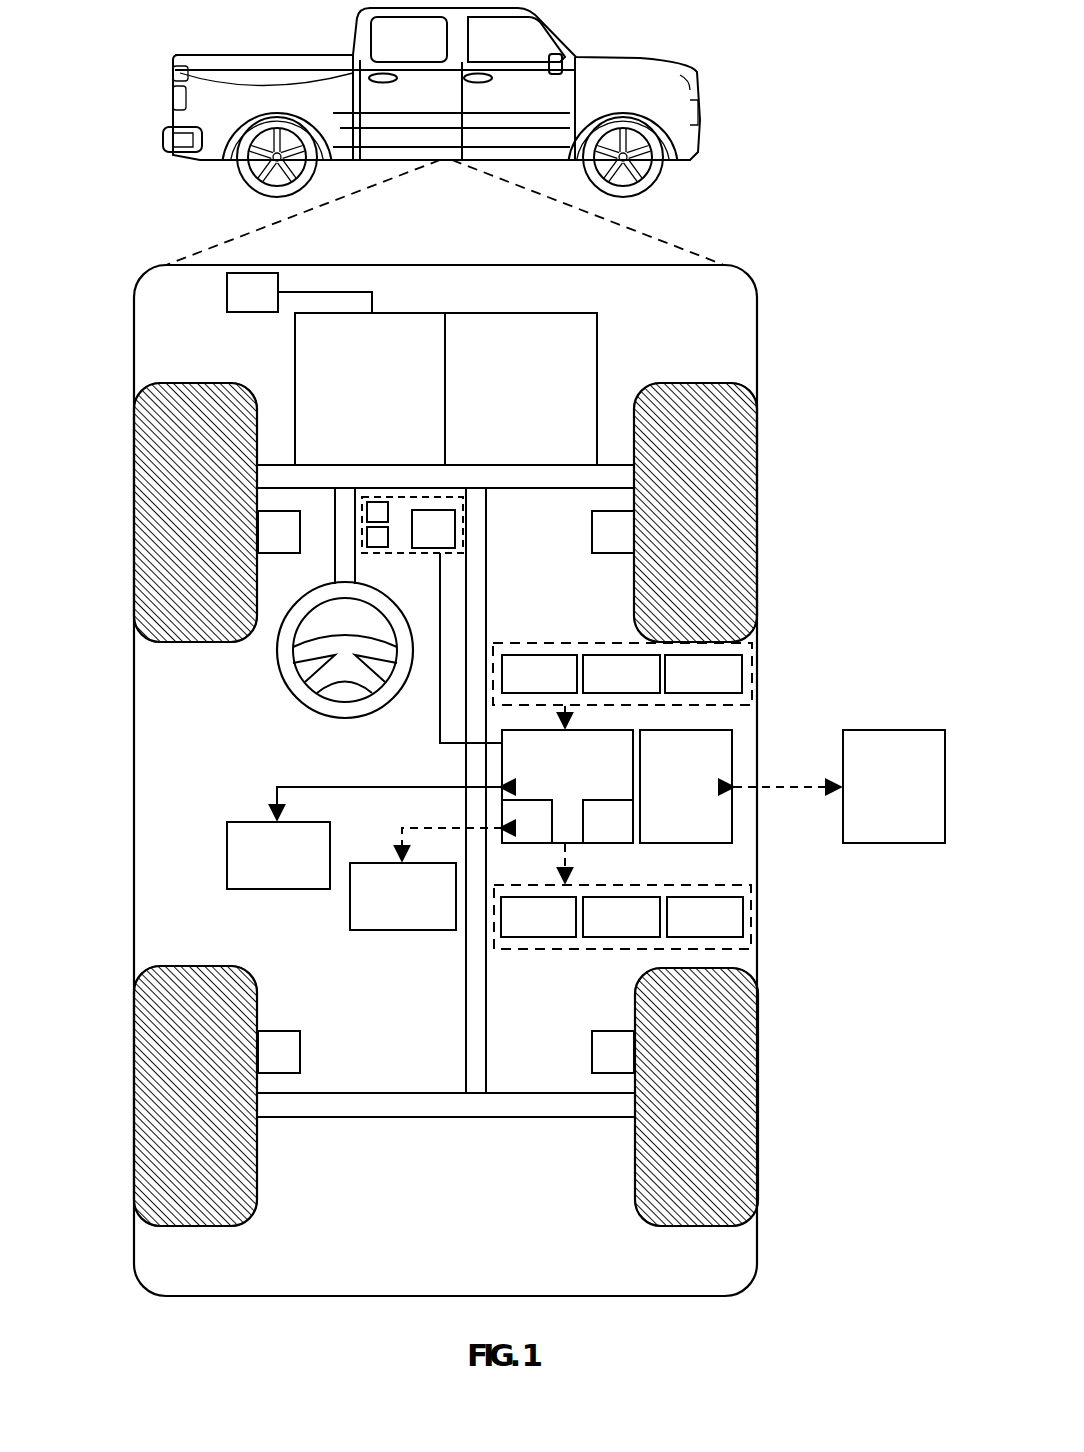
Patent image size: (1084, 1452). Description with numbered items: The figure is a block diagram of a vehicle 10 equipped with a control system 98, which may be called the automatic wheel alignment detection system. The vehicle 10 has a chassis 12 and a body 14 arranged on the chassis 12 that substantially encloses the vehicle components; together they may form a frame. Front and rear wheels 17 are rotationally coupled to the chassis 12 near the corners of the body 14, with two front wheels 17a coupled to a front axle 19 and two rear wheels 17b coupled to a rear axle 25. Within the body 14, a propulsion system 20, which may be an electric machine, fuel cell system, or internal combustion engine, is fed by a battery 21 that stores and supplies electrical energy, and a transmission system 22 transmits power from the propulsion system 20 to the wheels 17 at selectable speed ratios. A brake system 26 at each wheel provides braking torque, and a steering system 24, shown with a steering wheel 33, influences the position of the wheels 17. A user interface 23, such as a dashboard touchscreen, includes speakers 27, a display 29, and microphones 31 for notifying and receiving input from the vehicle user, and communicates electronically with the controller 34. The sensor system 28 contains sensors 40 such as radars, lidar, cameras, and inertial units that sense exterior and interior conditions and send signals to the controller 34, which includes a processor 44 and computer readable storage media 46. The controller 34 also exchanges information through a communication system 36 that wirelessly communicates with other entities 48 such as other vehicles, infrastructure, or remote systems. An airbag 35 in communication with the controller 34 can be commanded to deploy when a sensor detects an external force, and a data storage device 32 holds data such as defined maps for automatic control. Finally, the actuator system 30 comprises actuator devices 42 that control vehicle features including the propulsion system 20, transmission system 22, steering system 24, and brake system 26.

The vehicle 10 is at (638, 56).
The control system 98 is at (780, 287).
The body 14 is at (134, 743).
The wheels 17 is at (197, 383).
The front wheels 17a is at (160, 500).
The rear wheels 17b is at (160, 1085).
The front axle 19 is at (557, 490).
The rear axle 25 is at (520, 1093).
The chassis 12 is at (466, 965).
The battery 21 is at (258, 273).
The propulsion system 20 is at (356, 404).
The transmission system 22 is at (506, 404).
The brake system 26 is at (266, 546).
The steering wheel 33 is at (283, 668).
The steering system 24 is at (364, 558).
The speakers 27 is at (377, 502).
The display 29 is at (367, 540).
The user interface 23 is at (428, 497).
The microphones 31 is at (421, 543).
The sensor system 28 is at (580, 643).
The sensors 40 is at (526, 688).
The controller 34 is at (553, 784).
The processor 44 is at (514, 835).
The computer readable storage device or media 46 is at (595, 835).
The communication system 36 is at (672, 801).
The other entities 48 is at (880, 801).
The airbag 35 is at (264, 872).
The data storage device 32 is at (389, 913).
The actuator system 30 is at (585, 950).
The actuator devices 42 is at (525, 931).